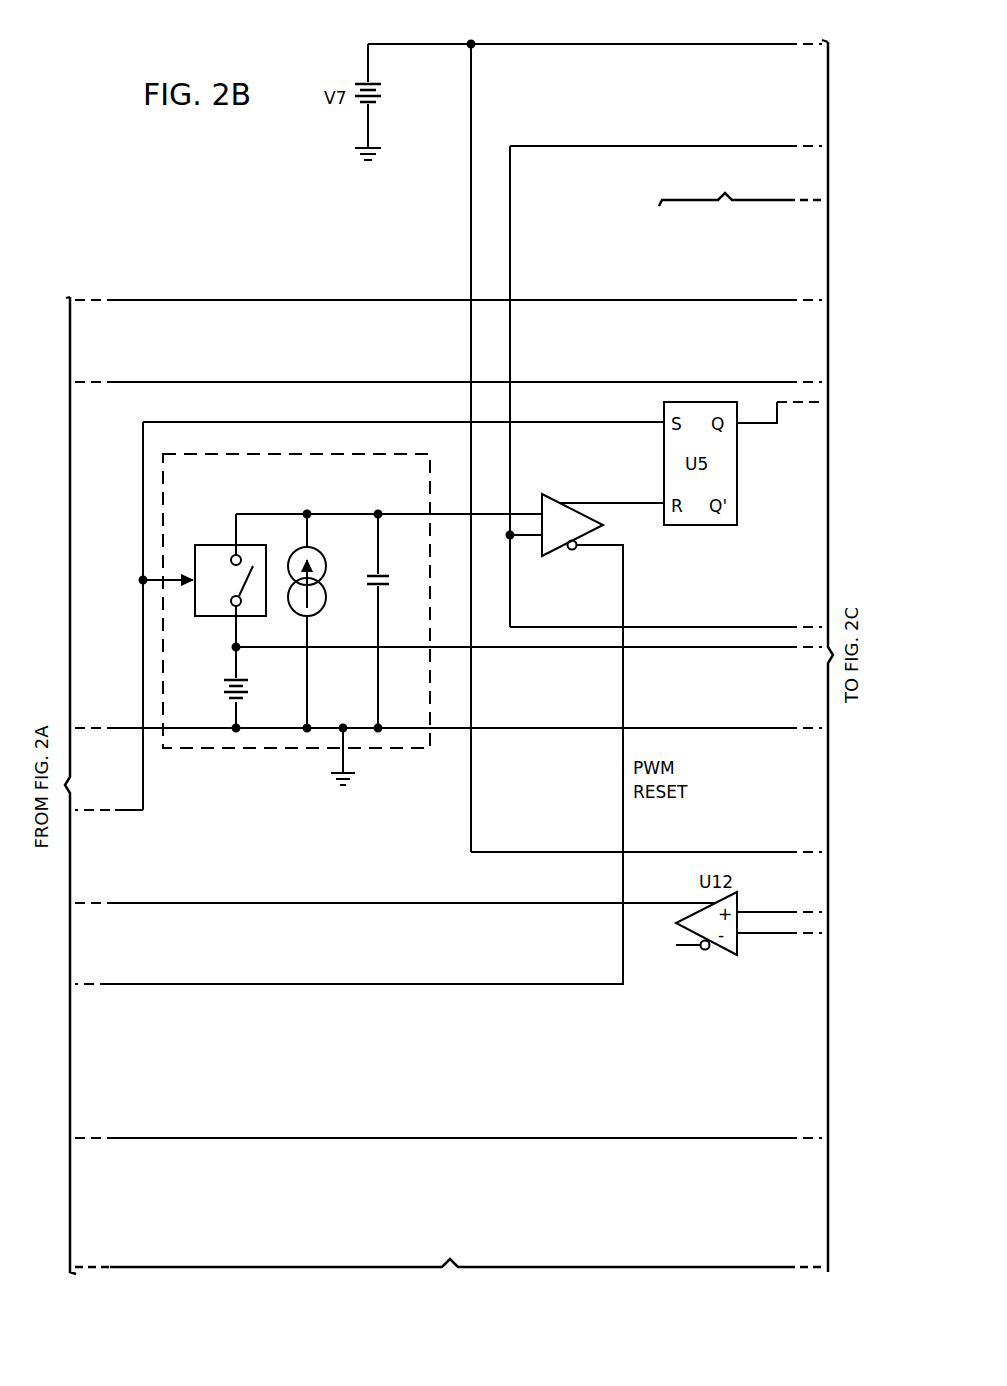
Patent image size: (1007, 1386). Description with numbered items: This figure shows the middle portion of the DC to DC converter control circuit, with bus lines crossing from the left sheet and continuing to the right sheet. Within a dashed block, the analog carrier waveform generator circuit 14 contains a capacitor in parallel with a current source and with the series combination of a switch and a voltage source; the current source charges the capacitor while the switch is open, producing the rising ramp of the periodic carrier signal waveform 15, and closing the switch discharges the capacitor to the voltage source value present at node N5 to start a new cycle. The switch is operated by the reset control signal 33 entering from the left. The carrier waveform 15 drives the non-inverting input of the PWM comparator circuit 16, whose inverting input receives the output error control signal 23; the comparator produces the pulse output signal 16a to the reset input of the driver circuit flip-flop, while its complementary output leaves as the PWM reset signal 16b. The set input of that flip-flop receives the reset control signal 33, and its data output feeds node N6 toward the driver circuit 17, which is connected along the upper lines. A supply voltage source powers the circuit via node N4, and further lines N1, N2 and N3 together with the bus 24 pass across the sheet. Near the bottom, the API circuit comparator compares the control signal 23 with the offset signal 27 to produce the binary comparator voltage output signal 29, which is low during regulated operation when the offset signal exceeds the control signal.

The analog carrier waveform generator circuit 14 is at (271, 752).
The periodic carrier signal waveform 15 is at (348, 512).
The PWM comparator circuit 16 is at (558, 496).
The pulse output signal 16a is at (612, 502).
The PWM reset signal 16b is at (621, 782).
The driver circuit 17 is at (740, 187).
The output error control signal 23 is at (705, 626).
The bus connection 24 is at (448, 1283).
The offset signal 27 is at (766, 936).
The binary comparator voltage output signal 29 is at (372, 905).
The reset control signal 33 is at (128, 812).
The node N1 is at (378, 380).
The node N2 is at (450, 1140).
The node N3 is at (378, 298).
The node N4 is at (644, 42).
The node N5 is at (515, 651).
The node N6 is at (759, 430).